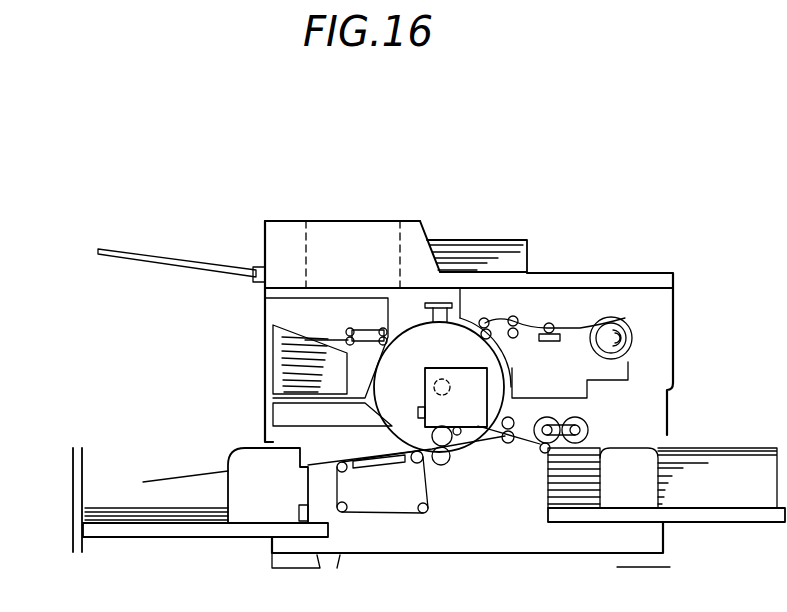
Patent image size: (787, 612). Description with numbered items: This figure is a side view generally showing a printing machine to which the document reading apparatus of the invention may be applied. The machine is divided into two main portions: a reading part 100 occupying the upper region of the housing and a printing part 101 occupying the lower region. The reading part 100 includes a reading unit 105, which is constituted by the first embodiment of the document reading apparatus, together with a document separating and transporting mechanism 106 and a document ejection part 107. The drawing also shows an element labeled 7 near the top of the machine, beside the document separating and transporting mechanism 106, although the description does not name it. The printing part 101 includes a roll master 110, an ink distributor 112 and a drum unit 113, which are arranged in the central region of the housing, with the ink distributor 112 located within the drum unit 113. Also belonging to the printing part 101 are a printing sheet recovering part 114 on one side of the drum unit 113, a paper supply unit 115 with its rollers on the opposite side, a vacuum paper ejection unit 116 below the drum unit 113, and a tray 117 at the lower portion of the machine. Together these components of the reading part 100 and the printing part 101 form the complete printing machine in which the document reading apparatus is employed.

The reading part 100 is at (381, 205).
The printing part 101 is at (578, 312).
The reading unit 105 is at (326, 232).
The document separating and transporting mechanism 106 is at (412, 233).
The document ejection part 107 is at (277, 230).
The original tray 7 is at (480, 238).
The roll master 110 is at (625, 320).
The ink distributor 112 is at (450, 386).
The drum unit 113 is at (470, 355).
The printing sheet recovering part 114 is at (273, 347).
The paper supply unit 115 is at (535, 445).
The vacuum paper ejection unit 116 is at (393, 468).
The tray 117 is at (147, 530).